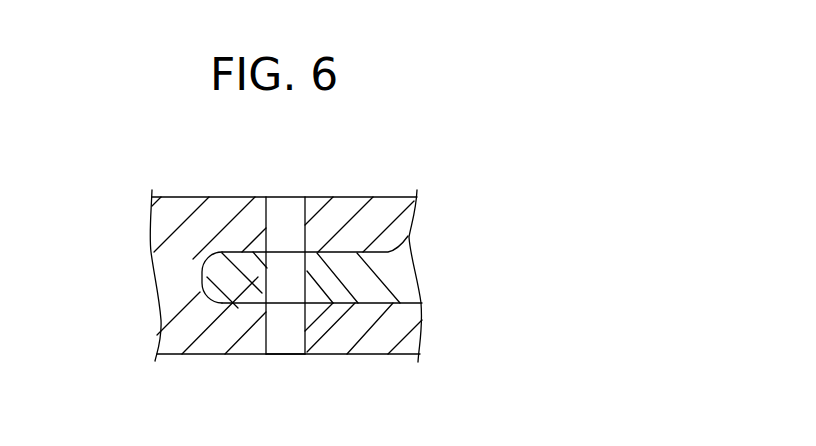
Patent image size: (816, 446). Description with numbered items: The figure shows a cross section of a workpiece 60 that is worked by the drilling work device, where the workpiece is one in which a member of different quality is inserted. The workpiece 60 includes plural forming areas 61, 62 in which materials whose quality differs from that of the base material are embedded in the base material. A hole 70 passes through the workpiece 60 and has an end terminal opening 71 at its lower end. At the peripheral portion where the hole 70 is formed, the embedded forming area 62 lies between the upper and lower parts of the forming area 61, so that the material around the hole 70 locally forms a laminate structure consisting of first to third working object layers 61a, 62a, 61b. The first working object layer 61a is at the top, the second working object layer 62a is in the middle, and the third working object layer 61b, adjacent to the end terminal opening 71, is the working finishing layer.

The workpiece 60 is at (388, 160).
The forming area 61 is at (172, 227).
The first working object layer 61a is at (255, 223).
The third working object layer 61b is at (262, 337).
The forming area 62 is at (395, 267).
The second working object layer 62a is at (231, 302).
The hole 70 is at (289, 215).
The end terminal opening 71 is at (290, 355).